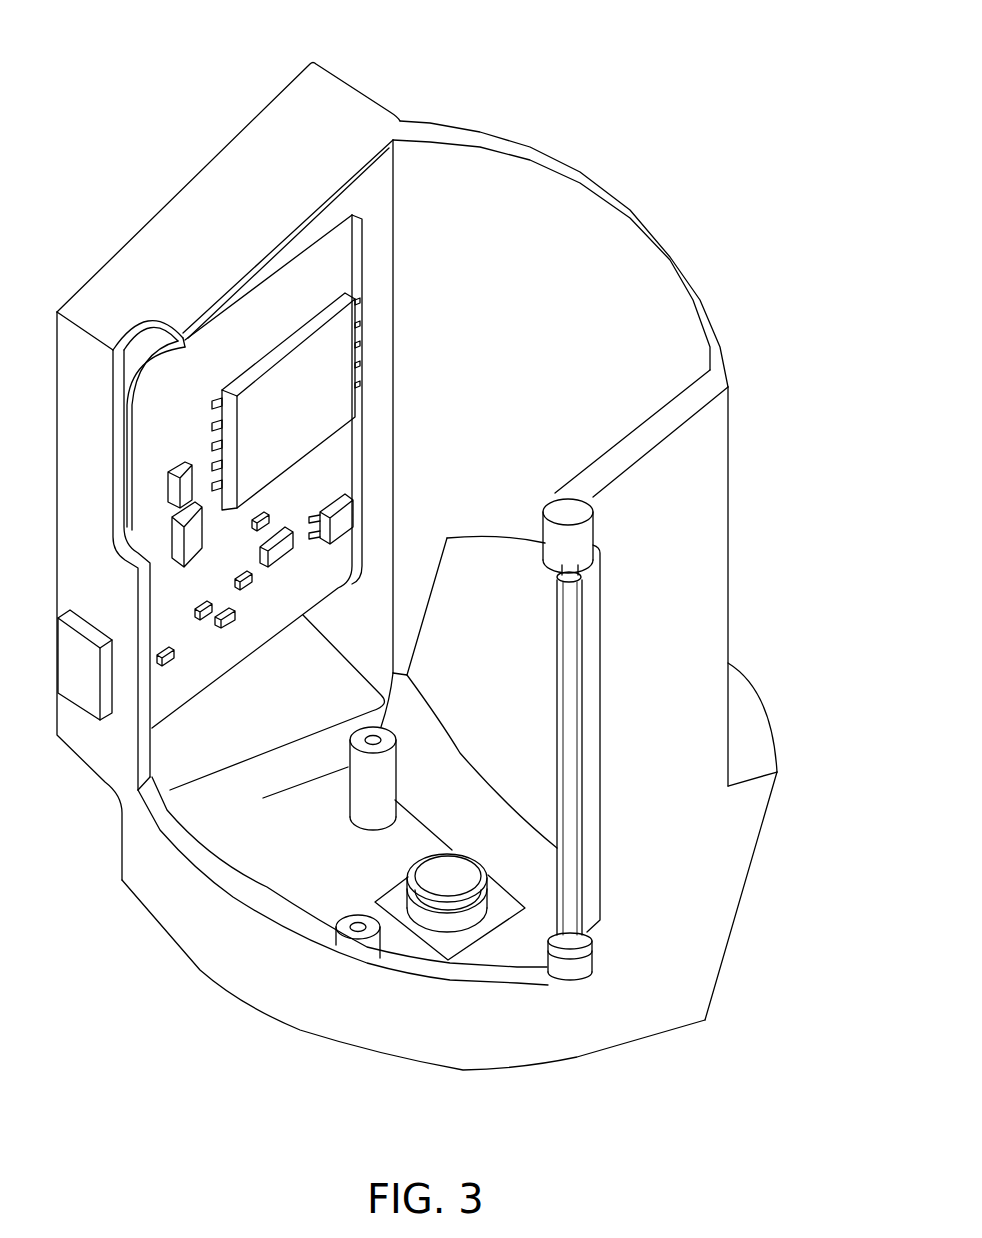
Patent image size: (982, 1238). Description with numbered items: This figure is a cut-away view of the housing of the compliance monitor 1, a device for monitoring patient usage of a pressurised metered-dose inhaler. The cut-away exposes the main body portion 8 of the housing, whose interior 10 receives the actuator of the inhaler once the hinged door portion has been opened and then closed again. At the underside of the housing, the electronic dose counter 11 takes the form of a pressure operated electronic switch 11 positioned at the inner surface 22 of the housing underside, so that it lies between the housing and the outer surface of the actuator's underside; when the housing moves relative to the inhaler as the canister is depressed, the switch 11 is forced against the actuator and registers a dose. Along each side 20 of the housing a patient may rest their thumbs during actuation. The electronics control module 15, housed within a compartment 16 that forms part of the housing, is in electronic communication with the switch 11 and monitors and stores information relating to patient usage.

The compliance monitor 1 is at (608, 117).
The main body portion 8 is at (662, 215).
The interior 10 is at (467, 230).
The electronic dose counter 11 is at (465, 868).
The electronics control module 15 is at (202, 347).
The compartment 16 is at (262, 143).
The side 20 is at (690, 638).
The inner surface 22 is at (403, 843).